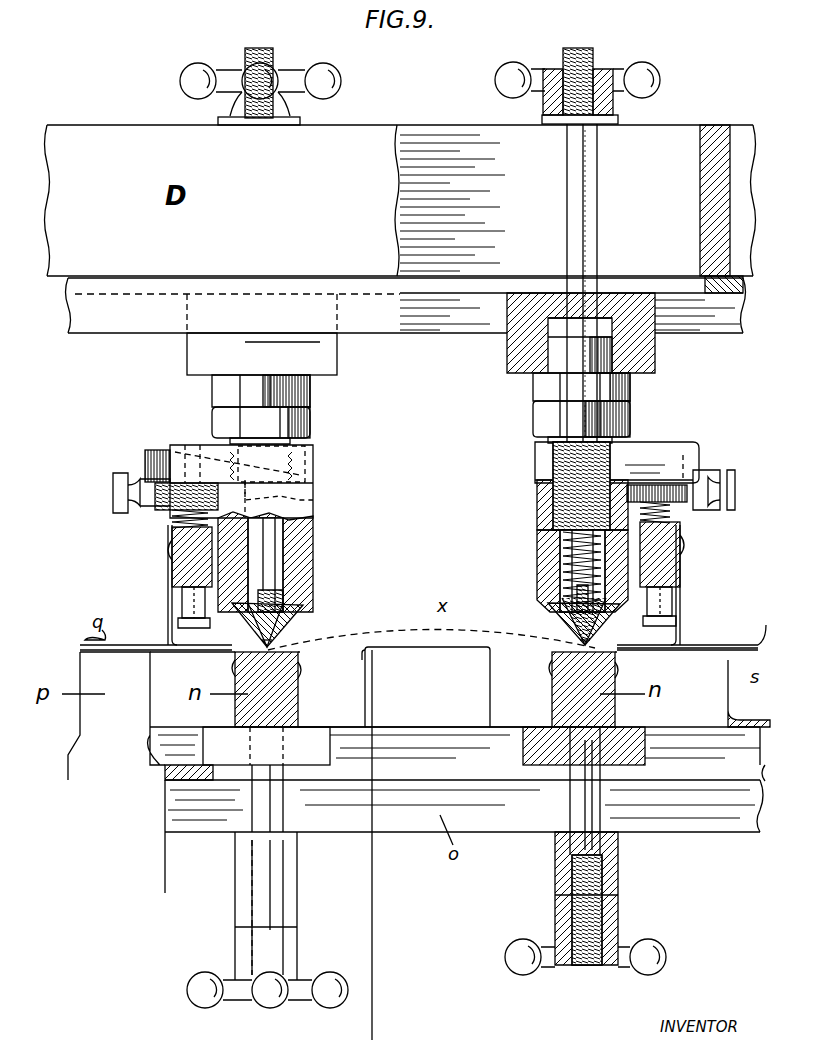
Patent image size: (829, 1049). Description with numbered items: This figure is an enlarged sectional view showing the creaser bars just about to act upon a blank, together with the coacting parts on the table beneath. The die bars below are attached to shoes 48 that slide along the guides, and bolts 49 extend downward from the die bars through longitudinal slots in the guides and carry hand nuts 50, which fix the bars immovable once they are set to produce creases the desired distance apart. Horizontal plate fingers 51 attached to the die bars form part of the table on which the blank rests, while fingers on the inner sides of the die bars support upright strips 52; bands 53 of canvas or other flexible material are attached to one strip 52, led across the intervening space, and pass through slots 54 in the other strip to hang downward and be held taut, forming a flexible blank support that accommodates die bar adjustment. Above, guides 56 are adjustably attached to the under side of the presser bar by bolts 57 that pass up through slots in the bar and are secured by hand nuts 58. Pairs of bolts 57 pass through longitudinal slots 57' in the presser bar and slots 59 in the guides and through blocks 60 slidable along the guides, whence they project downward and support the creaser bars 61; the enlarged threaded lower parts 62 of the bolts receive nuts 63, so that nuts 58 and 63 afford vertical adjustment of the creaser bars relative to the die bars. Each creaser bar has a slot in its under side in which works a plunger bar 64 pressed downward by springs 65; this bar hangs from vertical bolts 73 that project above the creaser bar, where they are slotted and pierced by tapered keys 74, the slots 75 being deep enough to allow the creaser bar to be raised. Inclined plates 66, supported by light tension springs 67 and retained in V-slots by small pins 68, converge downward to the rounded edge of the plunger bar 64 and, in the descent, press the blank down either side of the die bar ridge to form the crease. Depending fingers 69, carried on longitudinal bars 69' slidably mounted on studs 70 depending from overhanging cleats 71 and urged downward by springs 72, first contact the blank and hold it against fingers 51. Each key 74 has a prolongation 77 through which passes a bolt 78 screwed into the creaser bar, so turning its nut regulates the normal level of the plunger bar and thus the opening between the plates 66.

The shoe 48 is at (305, 760).
The bolt 49 is at (275, 808).
The hand nut 50 is at (272, 1000).
The plate finger 51 is at (672, 652).
The upright strip 52 is at (372, 698).
The band 53 is at (436, 650).
The slot 54 is at (362, 657).
The guide 56 is at (398, 330).
The bolt 57 is at (413, 233).
The longitudinal slot 57' is at (712, 191).
The hand nut 58 is at (183, 90).
The slot 59 is at (692, 298).
The block 60 is at (320, 356).
The creaser bar 61 is at (316, 528).
The enlarged threaded lower part 62 is at (312, 448).
The nut 63 is at (300, 400).
The plunger bar 64 is at (312, 594).
The spring 65 is at (562, 567).
The inclined plate 66 is at (252, 622).
The tension spring 67 is at (572, 548).
The pin 68 is at (300, 612).
The depending finger 69 is at (419, 587).
The longitudinal bar 69' is at (427, 554).
The stud 70 is at (185, 600).
The overhanging cleat 71 is at (212, 455).
The spring 72 is at (172, 512).
The vertical bolt 73 is at (270, 562).
The tapered key 74 is at (305, 465).
The slot 75 is at (312, 497).
The prolongation 77 is at (140, 466).
The bolt 78 is at (160, 450).